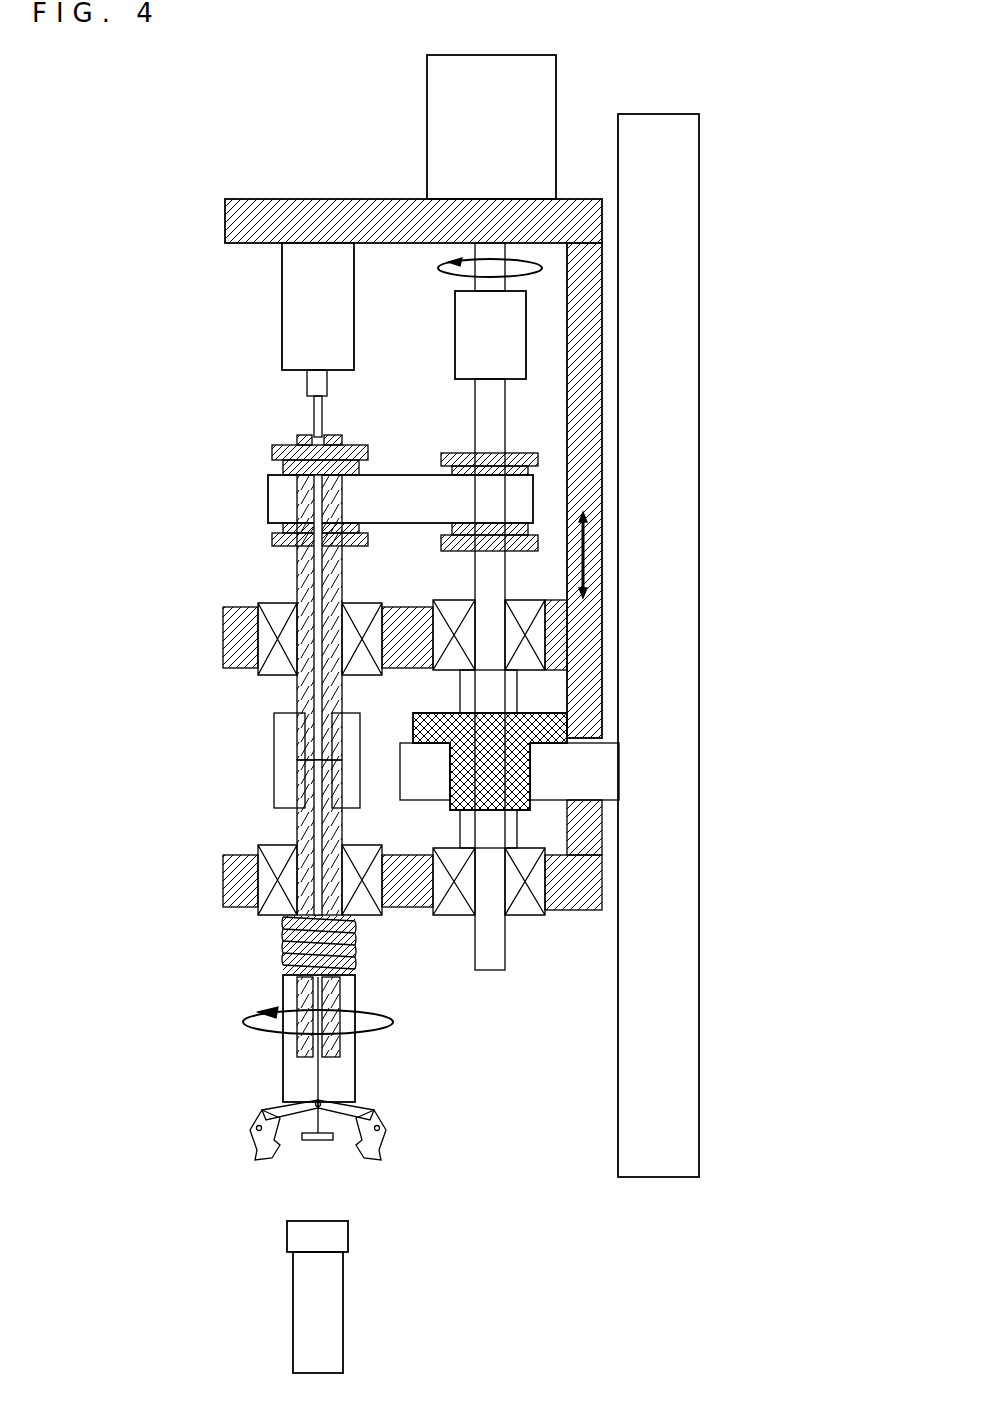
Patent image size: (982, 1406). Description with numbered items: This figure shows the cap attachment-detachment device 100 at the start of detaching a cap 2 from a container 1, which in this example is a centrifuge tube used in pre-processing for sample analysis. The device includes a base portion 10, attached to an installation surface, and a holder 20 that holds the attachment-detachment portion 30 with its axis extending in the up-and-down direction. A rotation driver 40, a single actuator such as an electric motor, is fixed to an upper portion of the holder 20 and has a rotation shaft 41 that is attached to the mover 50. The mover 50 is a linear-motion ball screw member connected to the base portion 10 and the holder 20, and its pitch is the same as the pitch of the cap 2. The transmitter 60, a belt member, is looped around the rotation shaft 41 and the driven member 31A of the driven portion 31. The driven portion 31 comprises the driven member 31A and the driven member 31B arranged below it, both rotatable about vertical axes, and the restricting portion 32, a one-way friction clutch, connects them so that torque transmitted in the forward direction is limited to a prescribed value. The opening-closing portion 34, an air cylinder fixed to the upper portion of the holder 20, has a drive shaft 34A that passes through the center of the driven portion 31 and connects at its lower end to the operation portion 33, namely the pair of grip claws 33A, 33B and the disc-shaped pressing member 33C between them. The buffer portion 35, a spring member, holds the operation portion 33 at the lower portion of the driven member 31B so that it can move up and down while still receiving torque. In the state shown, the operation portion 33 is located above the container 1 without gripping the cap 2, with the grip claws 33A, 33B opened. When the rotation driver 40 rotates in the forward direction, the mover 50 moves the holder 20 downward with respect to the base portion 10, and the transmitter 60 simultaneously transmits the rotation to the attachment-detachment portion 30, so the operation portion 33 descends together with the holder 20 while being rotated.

The cap attachment-detachment device 100 is at (843, 77).
The base portion 10 is at (683, 646).
The holder 20 is at (580, 483).
The rotation driver 40 is at (443, 126).
The attachment-detachment portion 30 is at (390, 305).
The opening-closing portion 34 is at (290, 307).
The drive shaft 34A is at (317, 418).
The rotation shaft 41 is at (487, 417).
The transmitter 60 is at (400, 493).
The driven portion 31 is at (240, 695).
The driven member 31A is at (297, 703).
The driven member 31B is at (267, 837).
The restricting portion 32 is at (360, 733).
The mover 50 is at (530, 760).
The buffer portion 35 is at (283, 960).
The operation portion 33 is at (253, 1093).
The grip claw 33A is at (258, 1145).
The grip claw 33B is at (378, 1145).
The pressing member 33C is at (318, 1142).
The cap 2 is at (337, 1237).
The container 1 is at (332, 1305).